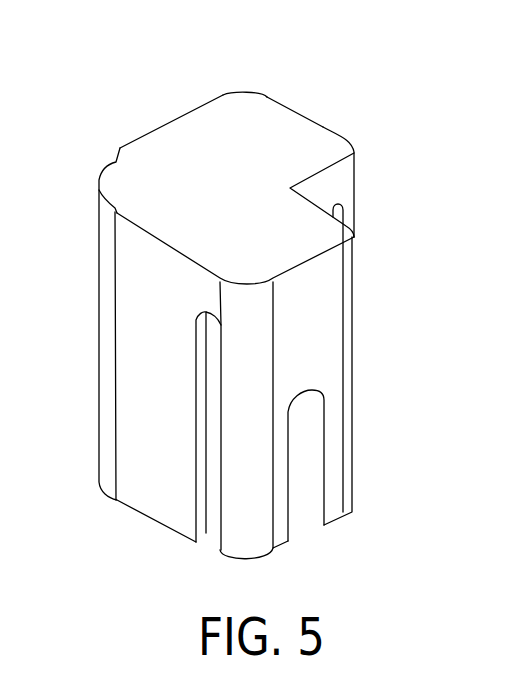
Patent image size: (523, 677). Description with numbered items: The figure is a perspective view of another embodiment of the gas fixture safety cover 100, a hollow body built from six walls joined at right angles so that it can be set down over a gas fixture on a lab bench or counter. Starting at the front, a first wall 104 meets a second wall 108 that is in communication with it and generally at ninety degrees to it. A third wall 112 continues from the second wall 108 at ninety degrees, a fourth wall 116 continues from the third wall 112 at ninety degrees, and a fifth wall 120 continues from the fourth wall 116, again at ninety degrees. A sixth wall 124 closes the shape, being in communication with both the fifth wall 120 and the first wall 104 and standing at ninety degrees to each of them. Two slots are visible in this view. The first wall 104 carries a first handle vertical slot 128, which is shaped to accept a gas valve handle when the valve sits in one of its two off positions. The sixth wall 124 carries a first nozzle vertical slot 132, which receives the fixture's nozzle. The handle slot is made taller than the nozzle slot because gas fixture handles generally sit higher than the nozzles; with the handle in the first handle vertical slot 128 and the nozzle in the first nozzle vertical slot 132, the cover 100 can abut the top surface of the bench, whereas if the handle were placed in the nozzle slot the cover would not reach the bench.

The gas fixture safety cover 100 is at (320, 140).
The first wall 104 is at (152, 492).
The second wall 108 is at (170, 122).
The third wall 112 is at (300, 107).
The fourth wall 116 is at (357, 184).
The fifth wall 120 is at (344, 207).
The sixth wall 124 is at (317, 302).
The first handle vertical slot 128 is at (218, 532).
The first nozzle vertical slot 132 is at (308, 527).